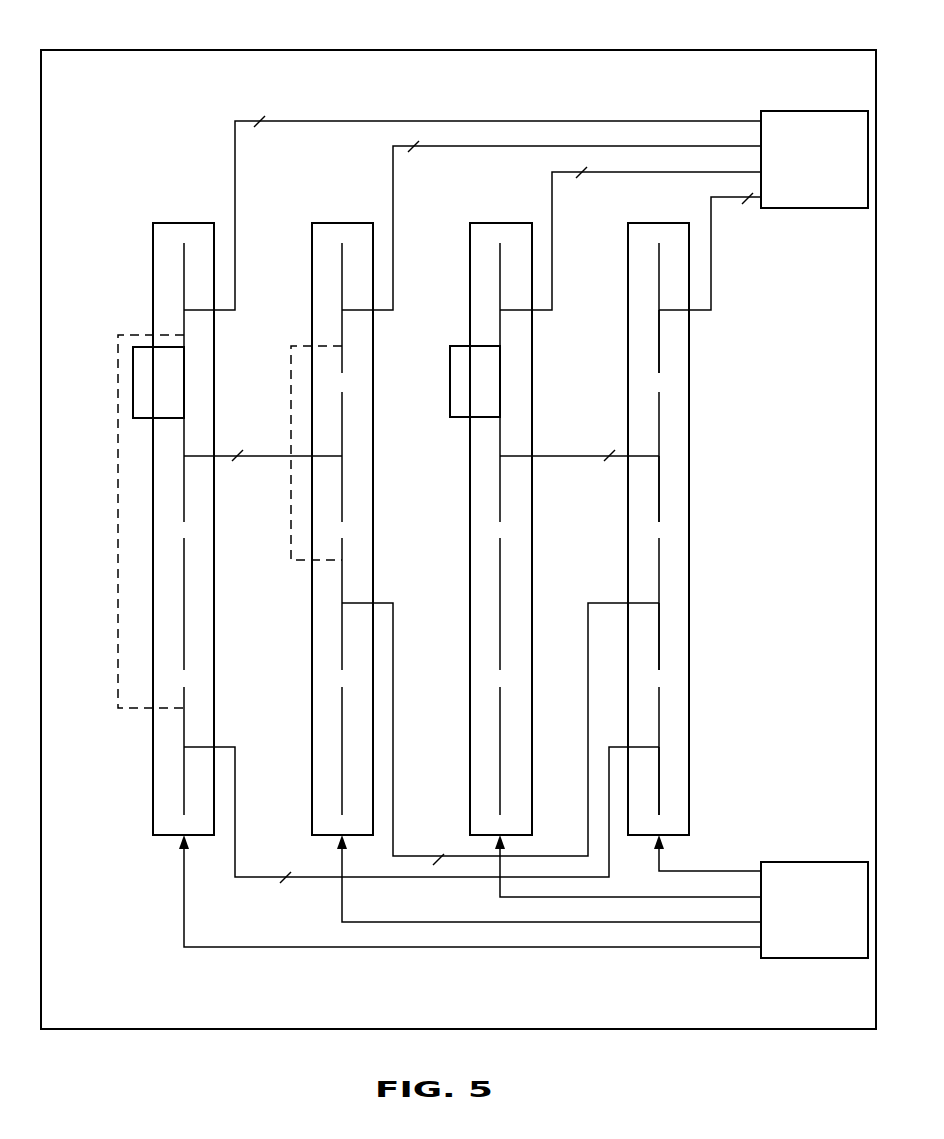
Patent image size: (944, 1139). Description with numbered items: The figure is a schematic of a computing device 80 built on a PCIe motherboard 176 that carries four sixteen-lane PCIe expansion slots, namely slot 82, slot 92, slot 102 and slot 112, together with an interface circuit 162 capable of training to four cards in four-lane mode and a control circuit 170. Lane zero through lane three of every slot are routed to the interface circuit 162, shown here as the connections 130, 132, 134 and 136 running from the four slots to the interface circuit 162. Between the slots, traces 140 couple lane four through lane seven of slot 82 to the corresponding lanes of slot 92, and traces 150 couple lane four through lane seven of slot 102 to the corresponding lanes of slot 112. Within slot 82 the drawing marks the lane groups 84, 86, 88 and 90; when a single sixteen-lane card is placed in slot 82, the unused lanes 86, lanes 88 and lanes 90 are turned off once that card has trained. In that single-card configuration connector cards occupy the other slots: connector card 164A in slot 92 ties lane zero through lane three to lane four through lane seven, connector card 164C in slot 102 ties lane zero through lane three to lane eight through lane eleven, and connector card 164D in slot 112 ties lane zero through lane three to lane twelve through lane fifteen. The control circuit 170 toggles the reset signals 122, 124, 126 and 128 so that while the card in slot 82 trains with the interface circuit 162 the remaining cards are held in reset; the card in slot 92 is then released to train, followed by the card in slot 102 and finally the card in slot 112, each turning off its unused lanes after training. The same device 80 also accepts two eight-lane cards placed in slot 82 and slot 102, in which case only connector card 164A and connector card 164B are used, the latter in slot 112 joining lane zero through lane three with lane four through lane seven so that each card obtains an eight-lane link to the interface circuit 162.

The computing device 80 is at (200, 35).
The slot 82 is at (672, 222).
The first pixel segment 84 is at (659, 358).
The lanes 86 is at (659, 510).
The lanes 88 is at (659, 655).
The lanes 90 is at (659, 802).
The slot 92 is at (512, 222).
The slot 102 is at (359, 222).
The slot 112 is at (201, 222).
The reset signal 122 is at (588, 947).
The reset signal 124 is at (636, 922).
The reset signal 126 is at (684, 897).
The reset signal 128 is at (730, 871).
The first control bus 130 is at (730, 197).
The second control bus 132 is at (683, 172).
The third control bus 134 is at (636, 146).
The fourth control bus 136 is at (588, 121).
The traces 140 is at (561, 456).
The traces 150 is at (258, 456).
The interface circuit 162 is at (798, 173).
The connector card 164A is at (450, 346).
The connector card 164B is at (139, 347).
The connector card 164C is at (293, 346).
The connector card 164D is at (118, 385).
The control circuit 170 is at (798, 923).
The substrate 176 is at (58, 1012).